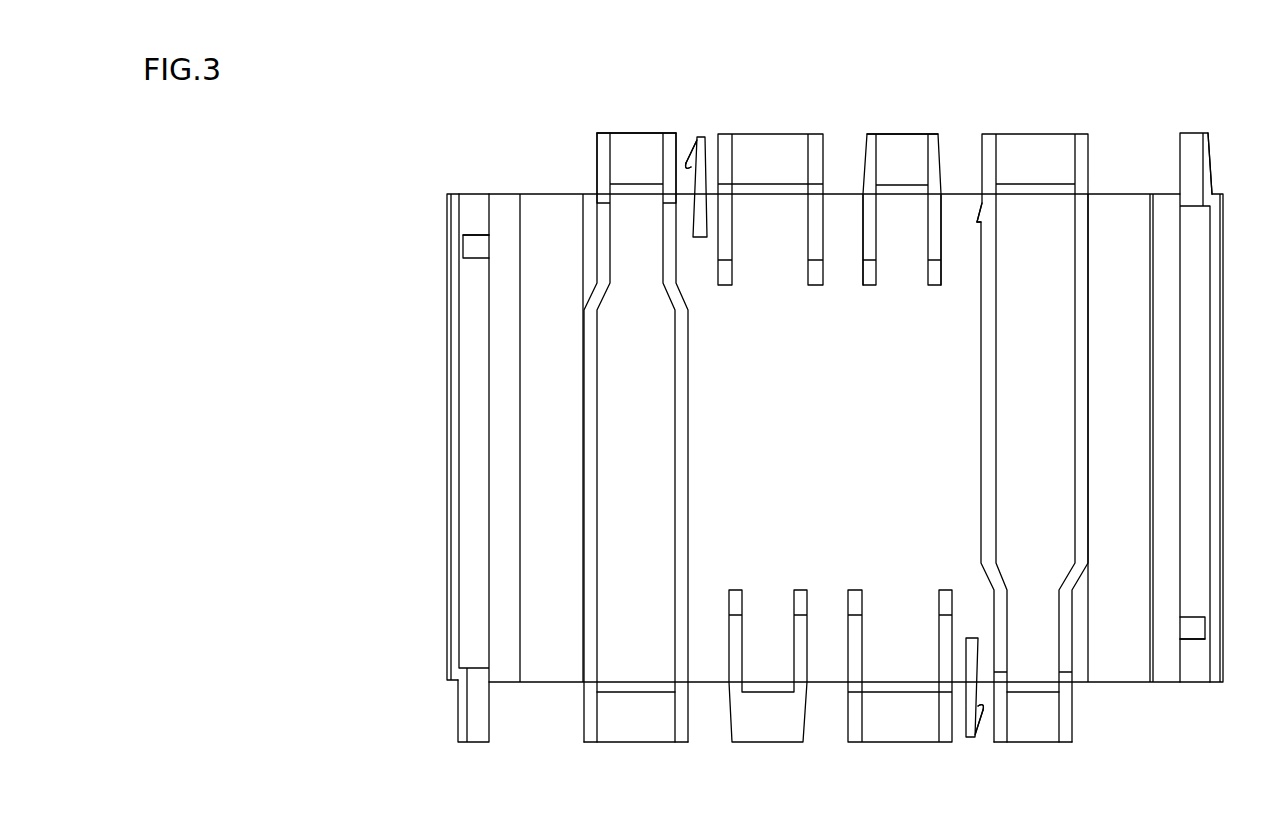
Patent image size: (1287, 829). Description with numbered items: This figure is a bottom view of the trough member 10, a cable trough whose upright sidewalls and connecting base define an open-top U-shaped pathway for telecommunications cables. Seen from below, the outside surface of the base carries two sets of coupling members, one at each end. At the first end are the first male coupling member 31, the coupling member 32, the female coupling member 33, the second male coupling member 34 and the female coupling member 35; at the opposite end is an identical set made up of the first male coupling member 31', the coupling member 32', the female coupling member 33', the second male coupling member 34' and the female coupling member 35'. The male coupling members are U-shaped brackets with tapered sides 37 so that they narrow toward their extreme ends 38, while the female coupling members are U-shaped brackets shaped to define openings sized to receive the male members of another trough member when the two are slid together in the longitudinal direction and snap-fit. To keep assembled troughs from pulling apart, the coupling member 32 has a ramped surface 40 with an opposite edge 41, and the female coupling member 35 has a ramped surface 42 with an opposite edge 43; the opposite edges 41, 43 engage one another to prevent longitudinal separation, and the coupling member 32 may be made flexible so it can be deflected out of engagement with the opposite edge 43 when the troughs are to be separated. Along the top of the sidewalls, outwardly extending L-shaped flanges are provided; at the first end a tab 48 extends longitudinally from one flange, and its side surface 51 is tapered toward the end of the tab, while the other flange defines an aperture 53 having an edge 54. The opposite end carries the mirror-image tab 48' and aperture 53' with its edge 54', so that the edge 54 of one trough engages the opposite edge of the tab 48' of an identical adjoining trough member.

The trough member 10 is at (402, 217).
The first male coupling member 31 is at (636, 391).
The first male coupling member 31' is at (1037, 757).
The coupling member 32 is at (729, 158).
The coupling member 32' is at (951, 729).
The female coupling member 33 is at (774, 172).
The female coupling member 33' is at (891, 709).
The second male coupling member 34 is at (905, 163).
The second male coupling member 34' is at (752, 709).
The female coupling member 35 is at (1032, 404).
The female coupling member 35' is at (621, 760).
The tapered sides 37 is at (598, 163).
The extreme ends 38 is at (620, 133).
The ramped surface 40 is at (690, 162).
The opposite edge 41 is at (685, 165).
The ramped surface 42 is at (979, 216).
The opposite edge 43 is at (980, 228).
The tab 48 is at (1183, 371).
The tab 48' is at (458, 510).
The side surface 51 is at (1209, 158).
The aperture 53 is at (412, 236).
The aperture 53' is at (1230, 621).
The edge 54 is at (471, 193).
The edge 54' is at (1202, 686).